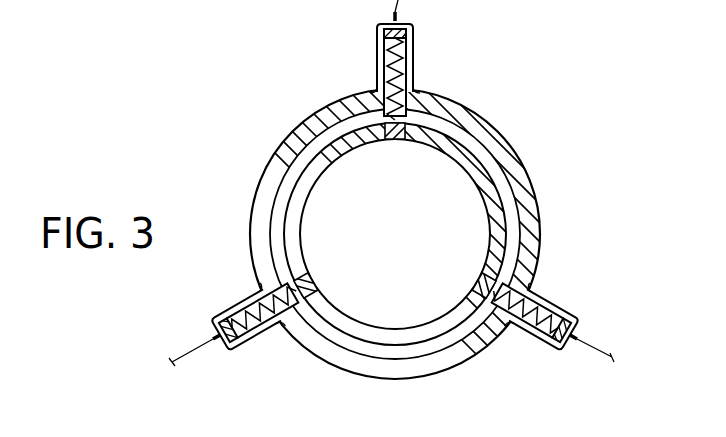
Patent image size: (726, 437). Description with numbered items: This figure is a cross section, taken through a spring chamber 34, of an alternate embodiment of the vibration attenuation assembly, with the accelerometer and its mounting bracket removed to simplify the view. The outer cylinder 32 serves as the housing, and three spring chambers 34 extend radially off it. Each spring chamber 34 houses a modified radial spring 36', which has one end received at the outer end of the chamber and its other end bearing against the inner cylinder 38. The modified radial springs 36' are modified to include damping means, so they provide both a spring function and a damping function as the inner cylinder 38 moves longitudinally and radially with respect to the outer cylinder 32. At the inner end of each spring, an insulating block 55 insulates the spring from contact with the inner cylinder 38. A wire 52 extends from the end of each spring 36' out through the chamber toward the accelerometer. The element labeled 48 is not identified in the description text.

The outer cylinder 32 is at (525, 225).
The spring chamber 34 is at (378, 25).
The modified radial spring 36' is at (353, 205).
The inner cylinder 38 is at (496, 173).
The inner bore 48 is at (497, 278).
The wire 52 is at (374, 250).
The insulating block 55 is at (397, 133).